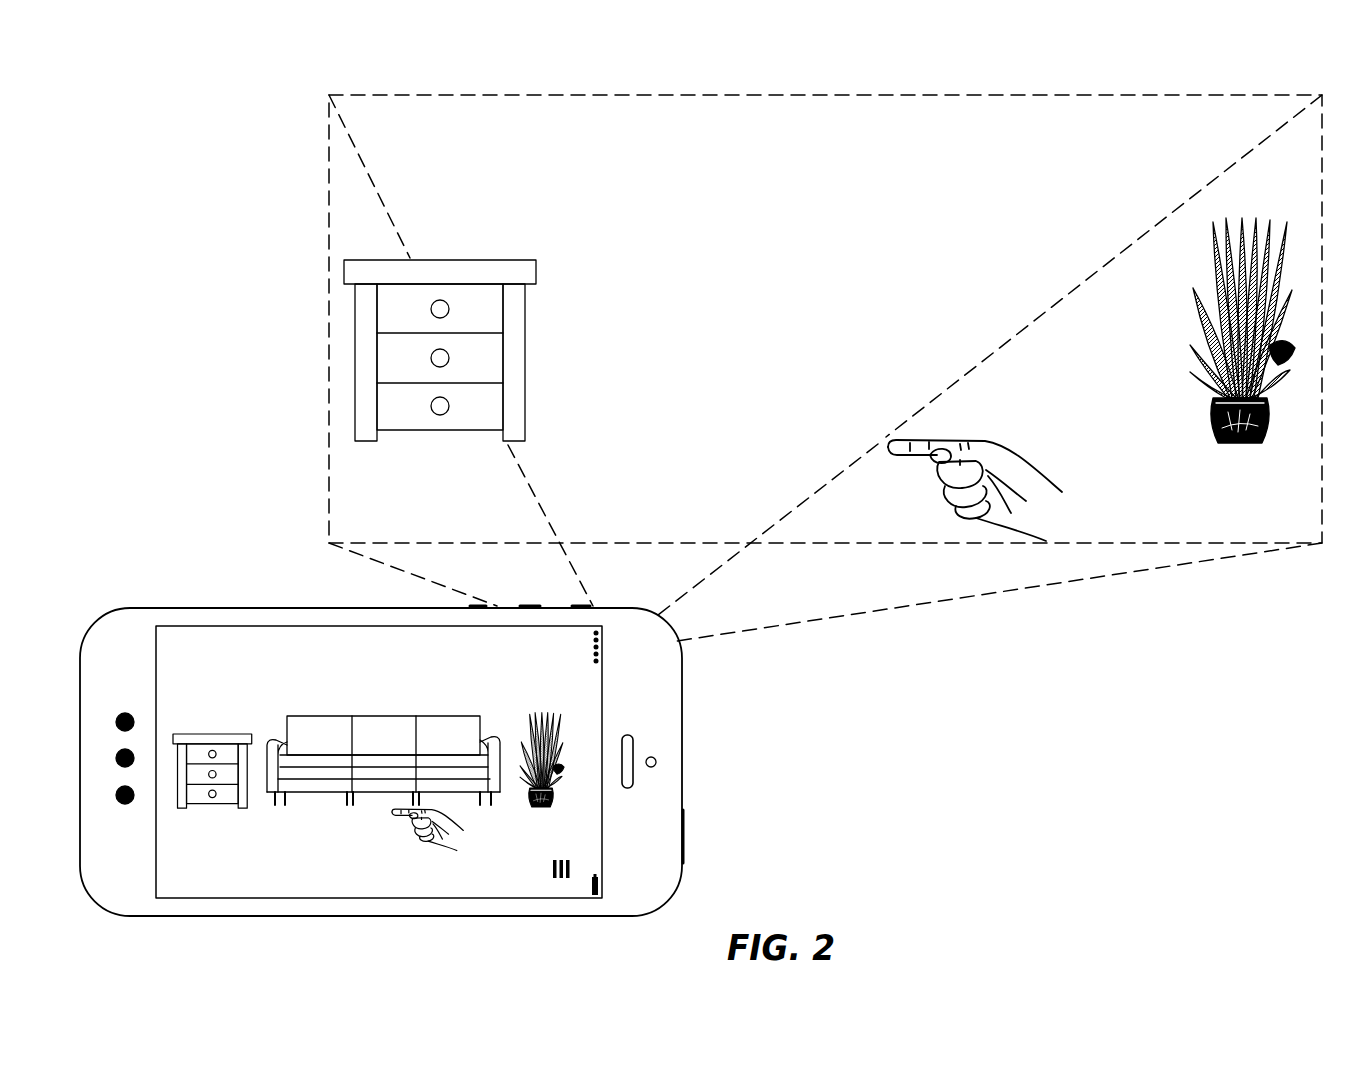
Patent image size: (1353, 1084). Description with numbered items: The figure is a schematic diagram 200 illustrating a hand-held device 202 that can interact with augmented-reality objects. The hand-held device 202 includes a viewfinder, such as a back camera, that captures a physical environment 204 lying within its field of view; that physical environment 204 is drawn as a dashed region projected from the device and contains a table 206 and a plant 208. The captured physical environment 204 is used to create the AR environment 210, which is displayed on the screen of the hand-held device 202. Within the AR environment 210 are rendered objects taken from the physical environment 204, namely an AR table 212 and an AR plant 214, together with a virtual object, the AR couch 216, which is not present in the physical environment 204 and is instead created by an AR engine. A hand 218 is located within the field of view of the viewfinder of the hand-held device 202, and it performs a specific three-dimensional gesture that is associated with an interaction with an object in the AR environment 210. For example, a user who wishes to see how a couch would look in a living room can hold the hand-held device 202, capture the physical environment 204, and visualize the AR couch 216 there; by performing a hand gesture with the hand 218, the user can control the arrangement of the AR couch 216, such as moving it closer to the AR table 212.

The schematic diagram 200 is at (205, 120).
The hand-held device 202 is at (184, 607).
The physical environment 204 is at (517, 95).
The table 206 is at (536, 266).
The plant 208 is at (1246, 444).
The AR environment 210 is at (273, 859).
The AR table 212 is at (208, 734).
The AR plant 214 is at (542, 808).
The AR couch 216 is at (389, 716).
The hand 218 is at (1030, 465).